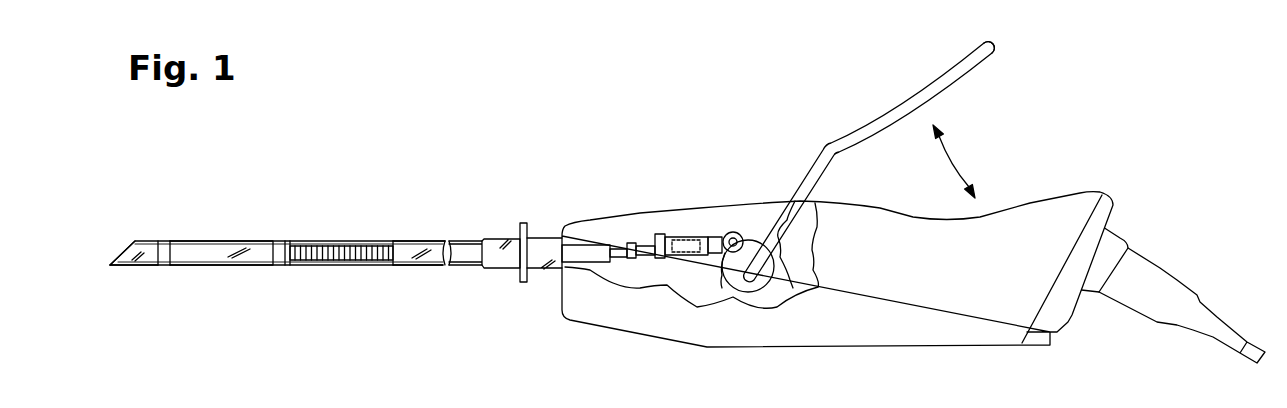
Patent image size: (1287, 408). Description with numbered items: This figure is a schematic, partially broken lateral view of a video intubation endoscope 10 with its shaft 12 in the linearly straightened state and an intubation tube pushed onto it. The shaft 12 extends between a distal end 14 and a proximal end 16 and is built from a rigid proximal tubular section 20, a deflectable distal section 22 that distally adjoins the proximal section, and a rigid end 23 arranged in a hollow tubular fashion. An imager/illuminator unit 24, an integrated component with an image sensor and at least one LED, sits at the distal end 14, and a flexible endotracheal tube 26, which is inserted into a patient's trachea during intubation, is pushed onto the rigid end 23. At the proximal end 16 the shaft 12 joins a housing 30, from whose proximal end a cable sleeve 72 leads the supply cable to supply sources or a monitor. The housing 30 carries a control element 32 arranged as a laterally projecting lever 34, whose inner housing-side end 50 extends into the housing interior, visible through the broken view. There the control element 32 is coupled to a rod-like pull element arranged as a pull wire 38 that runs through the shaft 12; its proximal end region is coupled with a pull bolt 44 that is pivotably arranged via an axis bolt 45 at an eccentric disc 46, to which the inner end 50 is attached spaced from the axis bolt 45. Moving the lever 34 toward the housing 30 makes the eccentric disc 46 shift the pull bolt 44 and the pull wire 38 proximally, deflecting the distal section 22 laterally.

The video intubation endoscope 10 is at (692, 129).
The shaft 12 is at (420, 243).
The distal end 14 is at (165, 241).
The proximal end 16 is at (593, 243).
The proximal tubular section 20 is at (462, 267).
The deflectable distal section 22 is at (320, 245).
The rigid end 23 is at (215, 243).
The imager/illuminator unit 24 is at (148, 267).
The flexible endotracheal tube 26 is at (128, 246).
The housing 30 is at (1056, 199).
The control element 32 is at (1000, 46).
The lever 34 is at (820, 160).
The pull wire 38 is at (623, 242).
The pull bolt 44 is at (648, 241).
The axis bolt 45 is at (733, 232).
The eccentric disc 46 is at (727, 280).
The inner housing-side end 50 is at (747, 275).
The cable sleeve 72 is at (1145, 265).